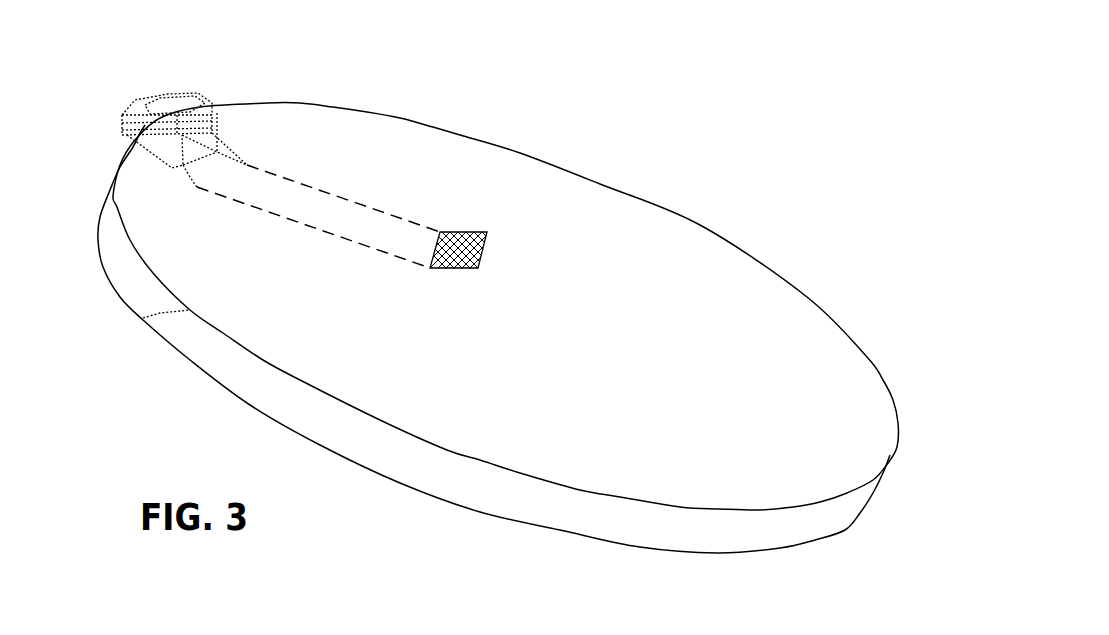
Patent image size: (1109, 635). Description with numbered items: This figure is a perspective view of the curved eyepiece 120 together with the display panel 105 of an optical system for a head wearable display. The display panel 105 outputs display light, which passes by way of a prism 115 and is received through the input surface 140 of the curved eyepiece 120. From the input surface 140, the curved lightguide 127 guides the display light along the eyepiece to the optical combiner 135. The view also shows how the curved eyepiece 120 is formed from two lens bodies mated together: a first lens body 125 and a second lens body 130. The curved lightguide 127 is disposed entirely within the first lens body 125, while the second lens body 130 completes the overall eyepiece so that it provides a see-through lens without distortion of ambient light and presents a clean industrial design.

The display panel 105 is at (122, 123).
The prism 115 is at (200, 143).
The curved eyepiece 120 is at (736, 209).
The first lens body 125 is at (140, 283).
The curved lightguide 127 is at (350, 222).
The second lens body 130 is at (362, 443).
The optical combiner 135 is at (487, 238).
The input surface 140 is at (187, 171).